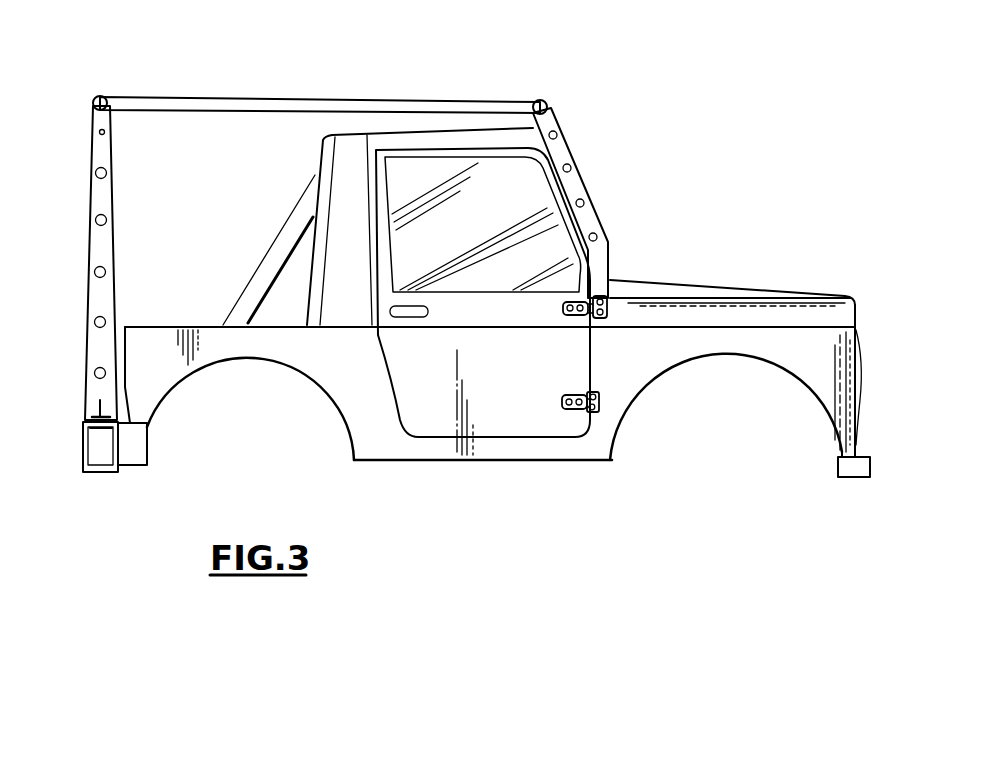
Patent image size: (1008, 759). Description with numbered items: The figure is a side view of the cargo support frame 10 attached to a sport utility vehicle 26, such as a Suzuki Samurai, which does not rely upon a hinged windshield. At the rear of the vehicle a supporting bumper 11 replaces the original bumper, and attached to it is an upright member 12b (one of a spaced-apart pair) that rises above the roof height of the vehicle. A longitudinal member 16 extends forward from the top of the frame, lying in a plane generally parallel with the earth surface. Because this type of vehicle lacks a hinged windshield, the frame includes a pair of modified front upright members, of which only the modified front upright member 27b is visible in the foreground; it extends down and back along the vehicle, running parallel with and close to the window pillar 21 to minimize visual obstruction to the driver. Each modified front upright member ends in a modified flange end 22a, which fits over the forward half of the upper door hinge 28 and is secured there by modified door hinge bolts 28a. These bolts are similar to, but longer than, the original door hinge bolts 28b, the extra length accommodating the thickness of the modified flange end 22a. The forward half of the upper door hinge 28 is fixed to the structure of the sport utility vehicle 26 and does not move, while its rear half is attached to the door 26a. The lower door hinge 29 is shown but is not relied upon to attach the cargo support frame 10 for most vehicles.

The cargo support frame 10 is at (198, 78).
The longitudinal member 16 is at (302, 97).
The upright member 12b is at (107, 247).
The supporting bumper 11 is at (98, 473).
The modified front upright member 27b is at (568, 152).
The window pillar 21 is at (568, 233).
The modified flange end 22a is at (612, 297).
The upper door hinge 28 is at (575, 318).
The modified door hinge bolt 28a is at (606, 305).
The lower door hinge 29 is at (563, 402).
The original door hinge bolt 28b is at (599, 396).
The sport utility vehicle 26 is at (572, 510).
The door 26a is at (427, 425).